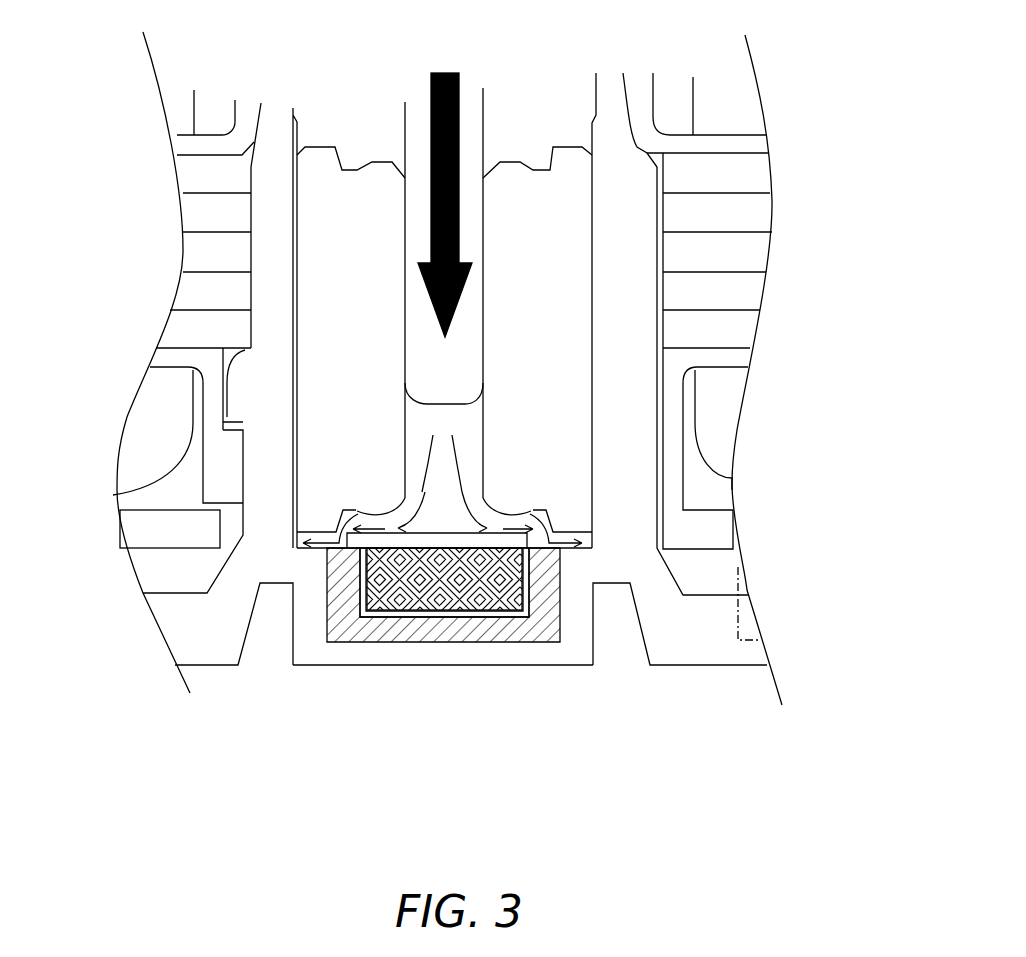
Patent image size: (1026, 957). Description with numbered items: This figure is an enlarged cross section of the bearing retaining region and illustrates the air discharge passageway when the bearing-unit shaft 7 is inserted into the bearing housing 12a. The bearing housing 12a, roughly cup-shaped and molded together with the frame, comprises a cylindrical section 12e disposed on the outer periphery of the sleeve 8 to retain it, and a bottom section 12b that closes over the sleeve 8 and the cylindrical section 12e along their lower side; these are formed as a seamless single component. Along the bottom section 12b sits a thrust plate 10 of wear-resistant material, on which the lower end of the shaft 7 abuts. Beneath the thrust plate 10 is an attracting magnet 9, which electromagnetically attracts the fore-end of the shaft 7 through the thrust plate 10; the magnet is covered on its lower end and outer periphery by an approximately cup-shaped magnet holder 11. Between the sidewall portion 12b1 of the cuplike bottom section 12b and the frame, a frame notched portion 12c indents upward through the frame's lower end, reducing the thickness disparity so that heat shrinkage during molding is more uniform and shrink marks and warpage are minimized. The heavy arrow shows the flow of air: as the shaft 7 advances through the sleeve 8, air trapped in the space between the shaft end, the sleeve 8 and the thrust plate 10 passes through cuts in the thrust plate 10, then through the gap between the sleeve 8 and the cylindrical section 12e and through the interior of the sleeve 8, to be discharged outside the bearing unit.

The shaft 7 is at (417, 258).
The sleeve 8 is at (358, 409).
The attracting magnet 9 is at (408, 583).
The thrust plate 10 is at (370, 542).
The magnet holder 11 is at (527, 627).
The bearing housing 12a is at (613, 395).
The bottom section 12b is at (372, 653).
The sidewall portion 12b1 is at (570, 595).
The frame notched portion 12c is at (283, 617).
The cylindrical section 12e is at (620, 263).